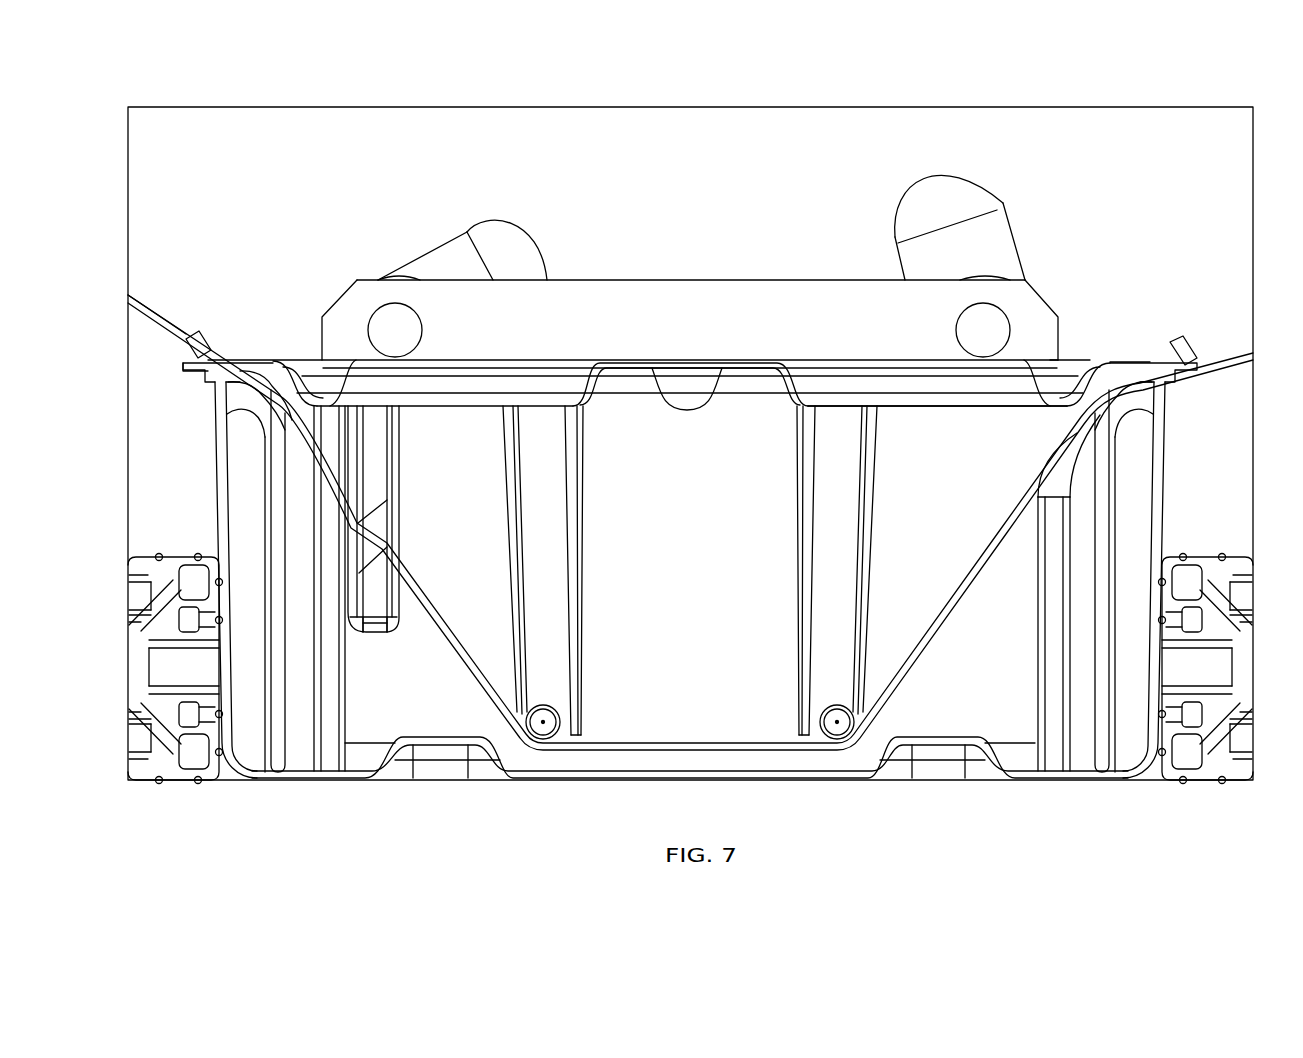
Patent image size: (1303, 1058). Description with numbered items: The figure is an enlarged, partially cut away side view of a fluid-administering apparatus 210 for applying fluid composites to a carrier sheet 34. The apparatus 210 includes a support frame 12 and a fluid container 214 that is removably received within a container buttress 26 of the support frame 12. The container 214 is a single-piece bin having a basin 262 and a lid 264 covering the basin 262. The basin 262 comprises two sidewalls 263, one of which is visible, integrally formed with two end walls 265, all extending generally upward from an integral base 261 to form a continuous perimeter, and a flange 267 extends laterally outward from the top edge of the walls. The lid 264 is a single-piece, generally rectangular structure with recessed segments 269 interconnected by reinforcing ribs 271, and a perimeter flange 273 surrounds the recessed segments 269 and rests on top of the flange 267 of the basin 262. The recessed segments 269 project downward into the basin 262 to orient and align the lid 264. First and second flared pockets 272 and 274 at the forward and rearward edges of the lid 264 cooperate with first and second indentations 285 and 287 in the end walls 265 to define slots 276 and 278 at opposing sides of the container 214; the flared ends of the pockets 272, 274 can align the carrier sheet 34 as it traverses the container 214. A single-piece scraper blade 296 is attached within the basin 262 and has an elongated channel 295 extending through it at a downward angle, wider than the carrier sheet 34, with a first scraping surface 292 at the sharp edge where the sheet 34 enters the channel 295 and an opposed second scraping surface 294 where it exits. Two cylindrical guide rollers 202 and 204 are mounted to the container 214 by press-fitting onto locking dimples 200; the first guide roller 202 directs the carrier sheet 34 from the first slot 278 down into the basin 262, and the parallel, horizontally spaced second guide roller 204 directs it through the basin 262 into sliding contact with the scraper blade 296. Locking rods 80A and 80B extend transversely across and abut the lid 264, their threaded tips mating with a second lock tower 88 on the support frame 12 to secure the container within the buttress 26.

The support frame 12 is at (1191, 544).
The container buttress 26 is at (197, 546).
The carrier sheet 34 is at (985, 553).
The second lock tower 88 is at (760, 278).
The first locking rod 80A is at (1003, 310).
The second locking rod 80B is at (390, 303).
The locking dimples 200 is at (548, 722).
The first guide roller 202 is at (838, 705).
The second guide roller 204 is at (540, 705).
The fluid-administering apparatus 210 is at (1124, 184).
The fluid container 214 is at (1081, 313).
The base 261 is at (688, 771).
The basin 262 is at (205, 461).
The sidewalls 263 is at (920, 428).
The lid 264 is at (617, 348).
The end walls 265 is at (240, 518).
The flange 267 is at (188, 352).
The recessed segments 269 is at (477, 395).
The reinforcing ribs 271 is at (708, 360).
The first flared pocket 272 is at (214, 340).
The perimeter flange 273 is at (1112, 357).
The second flared pocket 274 is at (1182, 345).
The slot 276 is at (237, 380).
The first slot 278 is at (1148, 362).
The first indentation 285 is at (213, 384).
The second indentation 287 is at (1166, 382).
The first scraping surface 292 is at (385, 530).
The second scraping surface 294 is at (352, 530).
The elongated channel 295 is at (352, 557).
The scraper blade 296 is at (372, 430).